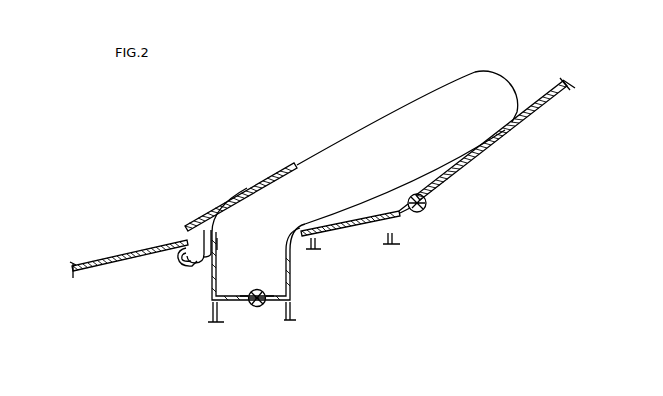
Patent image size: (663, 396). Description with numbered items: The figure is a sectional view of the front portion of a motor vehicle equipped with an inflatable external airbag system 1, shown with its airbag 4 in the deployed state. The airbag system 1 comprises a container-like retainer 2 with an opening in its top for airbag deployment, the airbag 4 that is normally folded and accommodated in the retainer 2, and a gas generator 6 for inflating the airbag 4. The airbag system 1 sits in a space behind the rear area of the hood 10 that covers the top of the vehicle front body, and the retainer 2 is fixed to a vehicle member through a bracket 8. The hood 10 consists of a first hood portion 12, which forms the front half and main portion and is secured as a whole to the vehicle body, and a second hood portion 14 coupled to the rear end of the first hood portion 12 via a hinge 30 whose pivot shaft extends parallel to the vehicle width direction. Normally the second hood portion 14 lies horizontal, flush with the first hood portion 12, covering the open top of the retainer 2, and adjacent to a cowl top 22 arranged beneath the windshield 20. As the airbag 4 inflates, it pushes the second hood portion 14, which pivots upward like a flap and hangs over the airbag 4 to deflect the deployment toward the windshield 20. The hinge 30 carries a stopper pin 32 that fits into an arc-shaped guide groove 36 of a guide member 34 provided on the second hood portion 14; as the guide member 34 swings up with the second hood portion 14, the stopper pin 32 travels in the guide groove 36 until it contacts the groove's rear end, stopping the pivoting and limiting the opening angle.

The inflatable external airbag system 1 is at (294, 277).
The retainer 2 is at (296, 258).
The airbag 4 is at (420, 102).
The gas generator 6 is at (256, 308).
The bracket 8 is at (213, 313).
The hood 10 is at (134, 249).
The first hood portion 12 is at (93, 257).
The second hood portion 14 is at (277, 165).
The windshield 20 is at (527, 117).
The cowl top 22 is at (360, 228).
The hinge 30 is at (153, 249).
The stopper pin 32 is at (187, 264).
The guide member 34 is at (217, 210).
The guide groove 36 is at (220, 238).